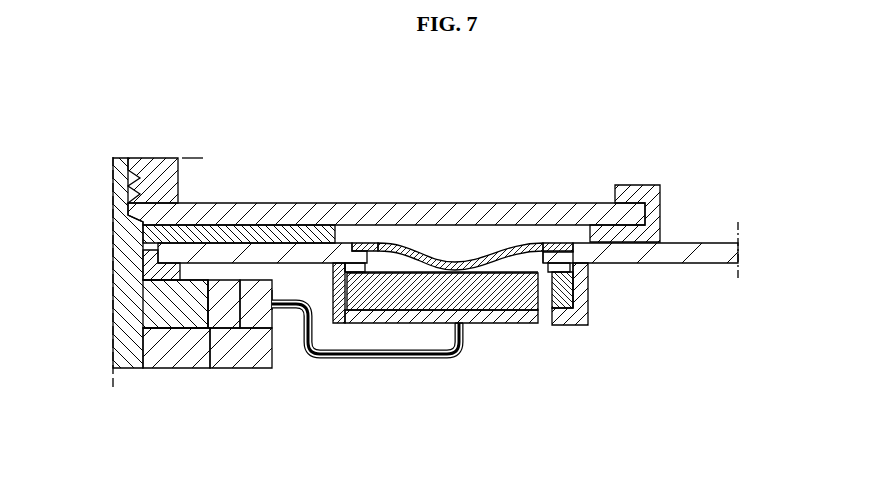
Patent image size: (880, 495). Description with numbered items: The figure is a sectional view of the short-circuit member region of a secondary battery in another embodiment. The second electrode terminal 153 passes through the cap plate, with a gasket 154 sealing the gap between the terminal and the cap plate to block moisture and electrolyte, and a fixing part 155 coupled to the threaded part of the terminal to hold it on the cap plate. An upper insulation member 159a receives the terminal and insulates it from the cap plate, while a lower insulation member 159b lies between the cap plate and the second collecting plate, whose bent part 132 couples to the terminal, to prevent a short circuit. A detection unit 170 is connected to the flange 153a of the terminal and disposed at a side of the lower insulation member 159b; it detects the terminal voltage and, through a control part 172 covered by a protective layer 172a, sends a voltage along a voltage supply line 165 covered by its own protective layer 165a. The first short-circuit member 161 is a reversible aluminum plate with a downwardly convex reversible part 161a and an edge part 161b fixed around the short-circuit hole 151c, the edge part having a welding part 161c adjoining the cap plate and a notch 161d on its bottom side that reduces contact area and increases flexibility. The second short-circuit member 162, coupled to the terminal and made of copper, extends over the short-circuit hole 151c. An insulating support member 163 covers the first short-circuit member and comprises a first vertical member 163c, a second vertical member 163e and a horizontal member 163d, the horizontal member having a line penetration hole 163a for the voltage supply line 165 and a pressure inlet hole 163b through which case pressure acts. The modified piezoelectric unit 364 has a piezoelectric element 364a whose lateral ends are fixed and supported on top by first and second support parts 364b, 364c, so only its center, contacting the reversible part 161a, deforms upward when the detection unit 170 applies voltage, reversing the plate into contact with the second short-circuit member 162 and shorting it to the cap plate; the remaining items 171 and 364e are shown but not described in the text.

The bent part 132 is at (170, 369).
The short-circuit hole 151c is at (582, 264).
The second electrode terminal 153 is at (118, 232).
The flange 153a is at (175, 300).
The gasket 154 is at (150, 257).
The fixing part 155 is at (160, 166).
The upper insulation member 159a is at (645, 187).
The lower insulation member 159b is at (267, 352).
The first short-circuit member 161 is at (623, 116).
The reversible part 161a is at (508, 245).
The edge part 161b is at (530, 248).
The welding part 161c is at (576, 246).
The notch 161d is at (560, 243).
The second short-circuit member 162 is at (226, 212).
The support member 163 is at (585, 327).
The line penetration hole 163a is at (474, 323).
The pressure inlet hole 163b is at (548, 318).
The first vertical member 163c is at (337, 238).
The horizontal member 163d is at (388, 323).
The second vertical member 163e is at (585, 298).
The voltage supply line 165 is at (355, 360).
The protective layer 165a is at (456, 332).
The detection unit 170 is at (207, 441).
The first support 171 is at (225, 323).
The control part 172 is at (252, 323).
The protective layer 172a is at (274, 292).
The piezoelectric unit 364 is at (468, 116).
The piezoelectric element 364a is at (418, 270).
The first support part 364b is at (385, 250).
The second support part 364c is at (495, 262).
The adhesive layer 364e is at (588, 298).